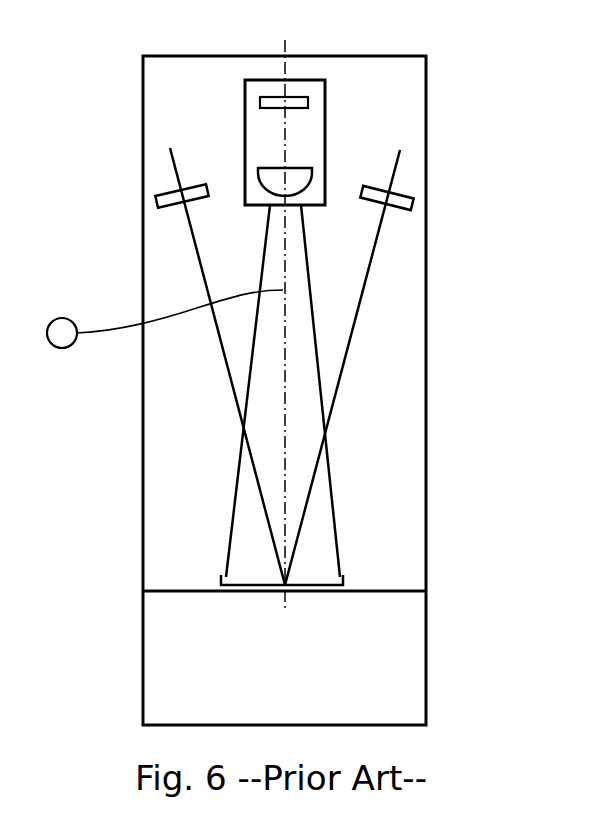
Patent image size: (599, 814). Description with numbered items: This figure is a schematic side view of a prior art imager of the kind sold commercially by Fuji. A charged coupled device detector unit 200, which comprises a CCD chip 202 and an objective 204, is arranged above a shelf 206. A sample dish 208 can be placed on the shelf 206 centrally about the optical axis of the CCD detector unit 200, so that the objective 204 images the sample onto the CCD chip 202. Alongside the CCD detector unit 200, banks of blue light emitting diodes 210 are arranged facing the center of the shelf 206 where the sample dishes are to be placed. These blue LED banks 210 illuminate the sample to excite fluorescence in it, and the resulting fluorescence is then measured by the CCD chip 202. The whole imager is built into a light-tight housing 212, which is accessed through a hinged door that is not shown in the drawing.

The CCD detector unit 200 is at (300, 80).
The CCD chip 202 is at (260, 100).
The objective 204 is at (270, 167).
The shelf 206 is at (382, 589).
The sample dish 208 is at (218, 578).
The blue LED banks 210 is at (167, 193).
The light-tight housing 212 is at (427, 415).